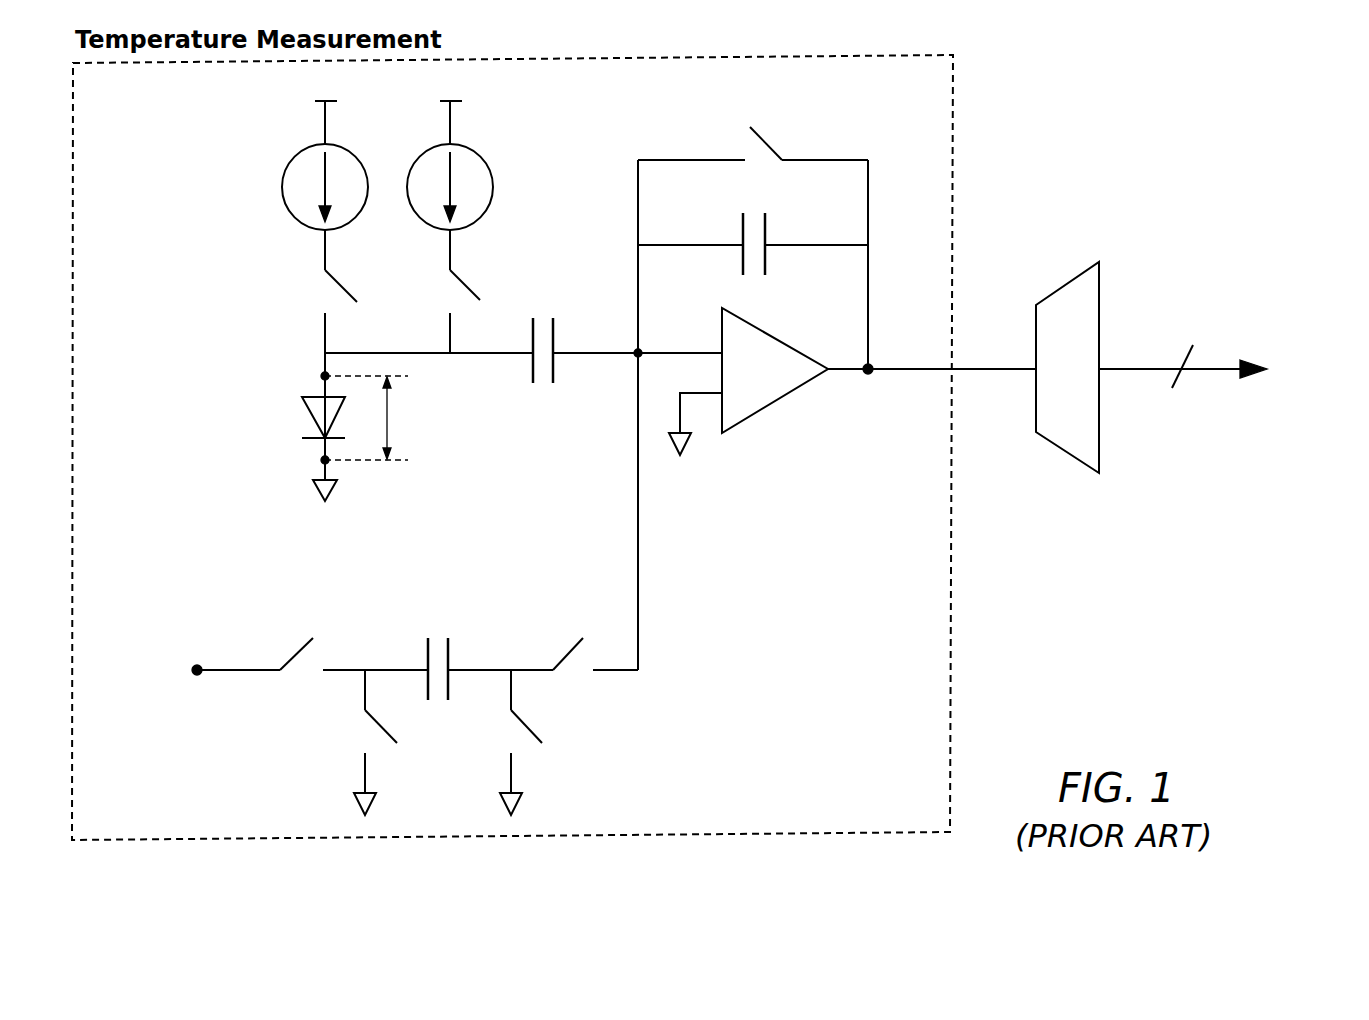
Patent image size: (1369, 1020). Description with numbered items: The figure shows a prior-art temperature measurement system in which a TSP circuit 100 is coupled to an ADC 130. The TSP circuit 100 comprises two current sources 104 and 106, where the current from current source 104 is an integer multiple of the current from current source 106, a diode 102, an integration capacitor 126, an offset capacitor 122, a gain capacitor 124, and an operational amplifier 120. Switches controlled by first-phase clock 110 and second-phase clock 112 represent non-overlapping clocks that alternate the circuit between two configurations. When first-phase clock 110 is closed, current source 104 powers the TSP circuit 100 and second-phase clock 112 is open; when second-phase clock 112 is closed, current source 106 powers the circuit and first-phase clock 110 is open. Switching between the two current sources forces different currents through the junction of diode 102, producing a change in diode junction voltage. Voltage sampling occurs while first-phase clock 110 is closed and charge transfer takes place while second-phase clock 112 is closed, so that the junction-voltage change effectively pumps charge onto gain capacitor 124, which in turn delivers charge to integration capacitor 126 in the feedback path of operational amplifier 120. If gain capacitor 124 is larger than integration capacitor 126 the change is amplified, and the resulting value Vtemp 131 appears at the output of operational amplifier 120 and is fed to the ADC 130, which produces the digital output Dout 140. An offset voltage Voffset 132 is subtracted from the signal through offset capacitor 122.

The TSP circuit 100 is at (940, 818).
The diode 102 is at (313, 420).
The current source 104 is at (307, 147).
The current source 106 is at (430, 147).
The P1 110 is at (337, 278).
The P2 112 is at (465, 275).
The operational amplifier 120 is at (745, 425).
The offset capacitor 122 is at (452, 650).
The gain capacitor 124 is at (548, 322).
The integration capacitor 126 is at (740, 234).
The ADC 130 is at (1100, 284).
The Vtemp 131 is at (932, 301).
The Voffset 132 is at (152, 673).
The Dout output 140 is at (1214, 373).